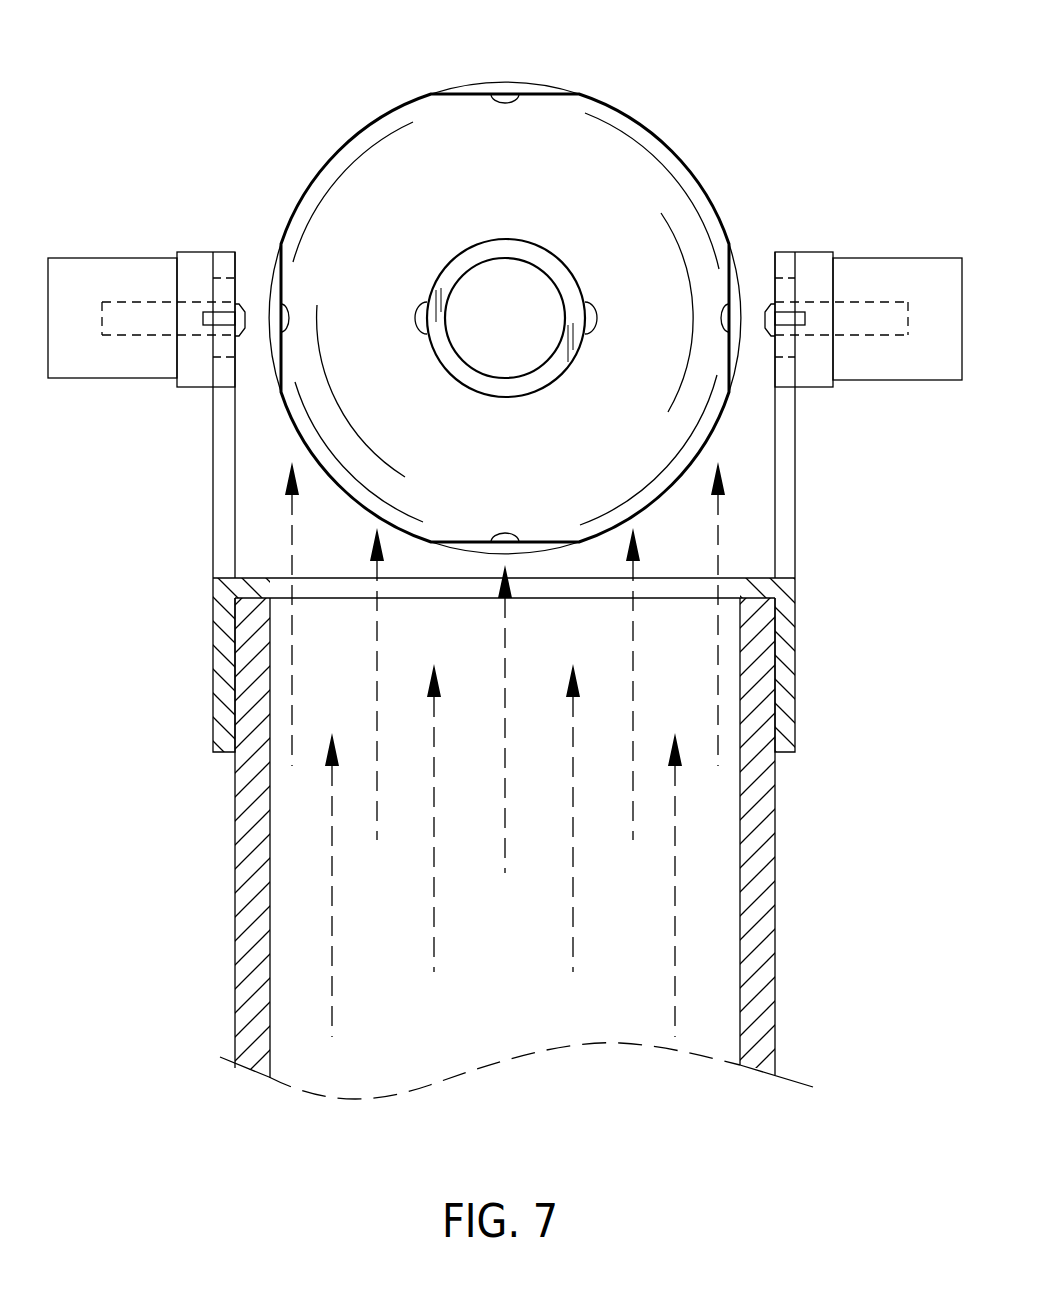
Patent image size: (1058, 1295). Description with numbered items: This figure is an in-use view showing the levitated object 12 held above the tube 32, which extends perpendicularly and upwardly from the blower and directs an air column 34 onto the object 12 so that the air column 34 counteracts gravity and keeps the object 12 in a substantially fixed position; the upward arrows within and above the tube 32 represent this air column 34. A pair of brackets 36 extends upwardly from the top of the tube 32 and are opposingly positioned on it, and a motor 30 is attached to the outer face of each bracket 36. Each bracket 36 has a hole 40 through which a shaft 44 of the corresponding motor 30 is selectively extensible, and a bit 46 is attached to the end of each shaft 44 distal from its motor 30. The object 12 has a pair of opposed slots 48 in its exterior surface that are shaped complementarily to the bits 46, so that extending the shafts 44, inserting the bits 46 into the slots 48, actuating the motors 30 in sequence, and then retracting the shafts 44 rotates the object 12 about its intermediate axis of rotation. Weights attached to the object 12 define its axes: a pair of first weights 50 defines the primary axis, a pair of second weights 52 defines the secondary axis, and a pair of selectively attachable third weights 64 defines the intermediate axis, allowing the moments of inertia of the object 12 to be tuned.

The object 12 is at (670, 146).
The motor 30 is at (83, 258).
The tube 32 is at (236, 877).
The air column 34 is at (394, 901).
The bracket 36 is at (223, 499).
The hole 40 is at (227, 290).
The shaft 44 is at (133, 313).
The bit 46 is at (245, 313).
The slot 48 is at (267, 333).
The first weight 50 is at (558, 274).
The second weight 52 is at (560, 94).
The third weight 64 is at (733, 262).